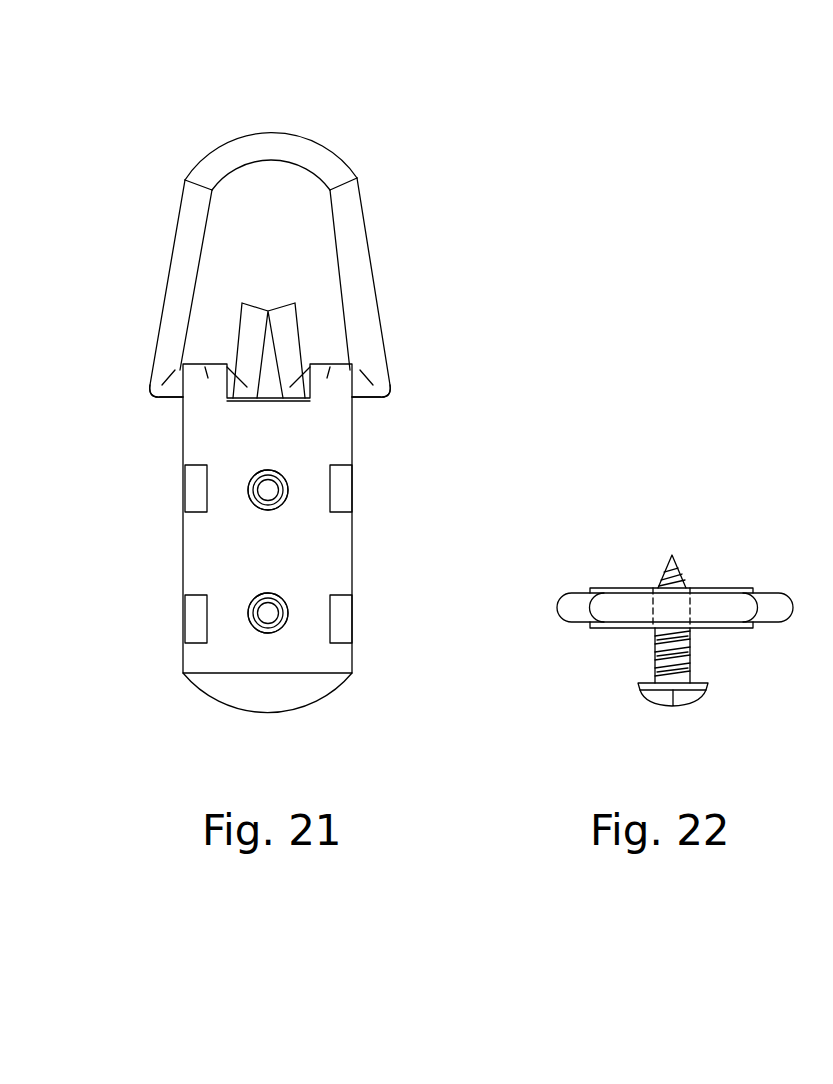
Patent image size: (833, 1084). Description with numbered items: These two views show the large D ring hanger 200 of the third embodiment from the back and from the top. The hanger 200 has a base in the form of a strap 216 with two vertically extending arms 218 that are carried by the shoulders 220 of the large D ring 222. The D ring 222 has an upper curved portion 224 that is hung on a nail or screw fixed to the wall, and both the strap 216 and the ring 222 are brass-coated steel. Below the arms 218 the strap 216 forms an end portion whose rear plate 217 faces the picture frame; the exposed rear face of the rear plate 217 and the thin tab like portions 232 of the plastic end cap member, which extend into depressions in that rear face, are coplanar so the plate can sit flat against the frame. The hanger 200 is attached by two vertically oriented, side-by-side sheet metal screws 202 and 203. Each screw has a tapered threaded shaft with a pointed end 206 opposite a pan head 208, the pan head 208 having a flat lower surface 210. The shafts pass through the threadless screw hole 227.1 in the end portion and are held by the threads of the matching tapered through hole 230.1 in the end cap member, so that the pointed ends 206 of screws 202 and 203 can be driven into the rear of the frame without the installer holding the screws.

In FIG. 21, the large D ring hanger 200 is at (294, 400).
In FIG. 22, the large D ring hanger 200 is at (660, 603).
In FIG. 21, the sheet metal screw 202 is at (250, 465).
In FIG. 22, the sheet metal screw 202 is at (672, 620).
In FIG. 21, the sheet metal screw 203 is at (248, 595).
In FIG. 21, the pointed end 206 is at (287, 500).
In FIG. 22, the pointed end 206 is at (668, 563).
In FIG. 22, the pan head 208 is at (669, 690).
In FIG. 22, the flat lower surface 210 is at (650, 683).
In FIG. 21, the strap 216 is at (289, 538).
In FIG. 22, the strap 216 is at (662, 558).
In FIG. 21, the rear plate 217 is at (205, 543).
In FIG. 21, the arms 218 is at (328, 375).
In FIG. 21, the shoulders 220 is at (160, 398).
In FIG. 21, the large D ring 222 is at (287, 242).
In FIG. 22, the large D ring 222 is at (641, 576).
In FIG. 21, the upper curved portion 224 is at (222, 158).
In FIG. 22, the upper curved portion 224 is at (618, 612).
In FIG. 22, the threadless screw hole 227.1 is at (725, 574).
In FIG. 22, the tapered through hole 230.1 is at (653, 605).
In FIG. 21, the tab like portions 232 is at (195, 485).